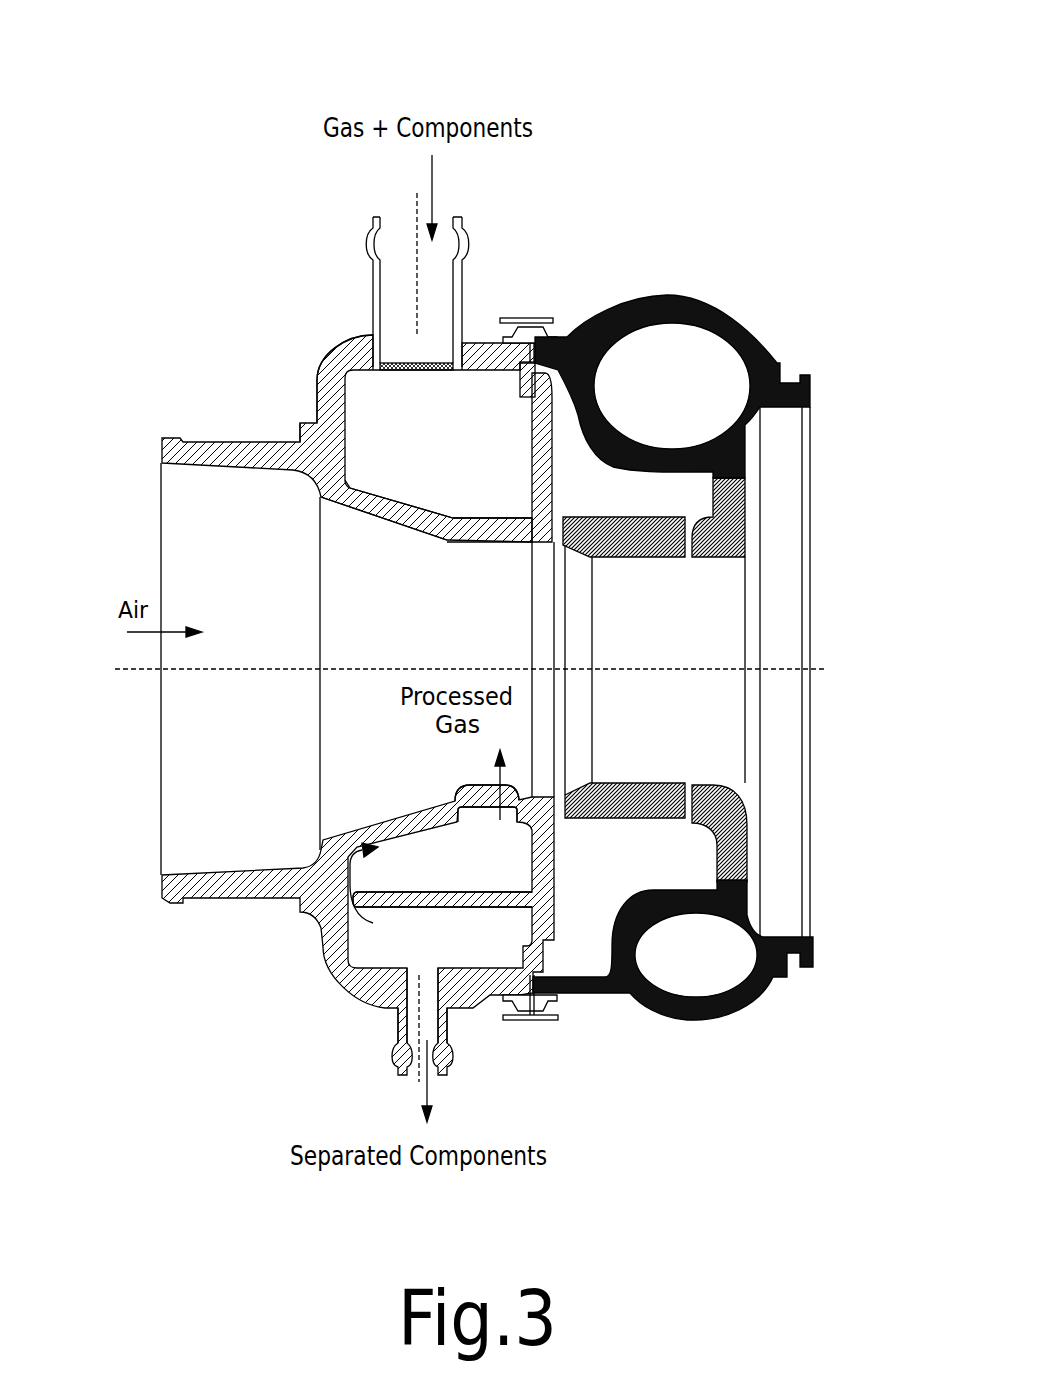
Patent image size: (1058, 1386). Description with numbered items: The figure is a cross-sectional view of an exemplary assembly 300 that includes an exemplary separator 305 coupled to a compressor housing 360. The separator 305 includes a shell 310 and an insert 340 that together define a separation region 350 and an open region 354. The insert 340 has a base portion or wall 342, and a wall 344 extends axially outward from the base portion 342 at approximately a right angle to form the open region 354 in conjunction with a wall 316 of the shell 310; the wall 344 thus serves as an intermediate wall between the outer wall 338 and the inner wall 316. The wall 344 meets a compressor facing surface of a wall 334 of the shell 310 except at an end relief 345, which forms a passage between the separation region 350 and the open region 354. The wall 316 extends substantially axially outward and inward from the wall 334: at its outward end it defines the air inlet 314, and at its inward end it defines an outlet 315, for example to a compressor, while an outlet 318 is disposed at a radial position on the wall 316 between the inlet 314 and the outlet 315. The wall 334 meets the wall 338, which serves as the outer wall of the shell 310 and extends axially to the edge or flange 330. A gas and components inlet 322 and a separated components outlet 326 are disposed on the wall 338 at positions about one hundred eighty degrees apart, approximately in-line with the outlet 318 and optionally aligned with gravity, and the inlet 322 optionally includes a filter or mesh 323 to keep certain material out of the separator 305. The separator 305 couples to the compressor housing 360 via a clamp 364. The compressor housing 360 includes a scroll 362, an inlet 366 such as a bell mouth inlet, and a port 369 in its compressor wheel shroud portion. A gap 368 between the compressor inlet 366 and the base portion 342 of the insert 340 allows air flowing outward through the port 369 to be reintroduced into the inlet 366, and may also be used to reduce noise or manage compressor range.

The assembly 300 is at (683, 36).
The separator 305 is at (247, 205).
The shell 310 is at (320, 373).
The air inlet 314 is at (160, 462).
The outlet 315 is at (530, 543).
The wall 316 is at (438, 543).
The outlet 318 is at (478, 785).
The gas and components inlet 322 is at (370, 215).
The filter or mesh 323 is at (422, 371).
The separated components outlet 326 is at (397, 1070).
The edge or flange 330 is at (518, 380).
The wall 334 is at (323, 410).
The wall 338 is at (357, 353).
The insert 340 is at (555, 860).
The base portion or wall 342 is at (531, 498).
The wall 344 is at (447, 910).
The end relief 345 is at (362, 880).
The separation region 350 is at (460, 469).
The open region 354 is at (500, 854).
The compressor housing 360 is at (687, 297).
The scroll 362 is at (713, 973).
The clamp 364 is at (531, 317).
The inlet 366 is at (567, 578).
The gap 368 is at (567, 509).
The port 369 is at (683, 780).